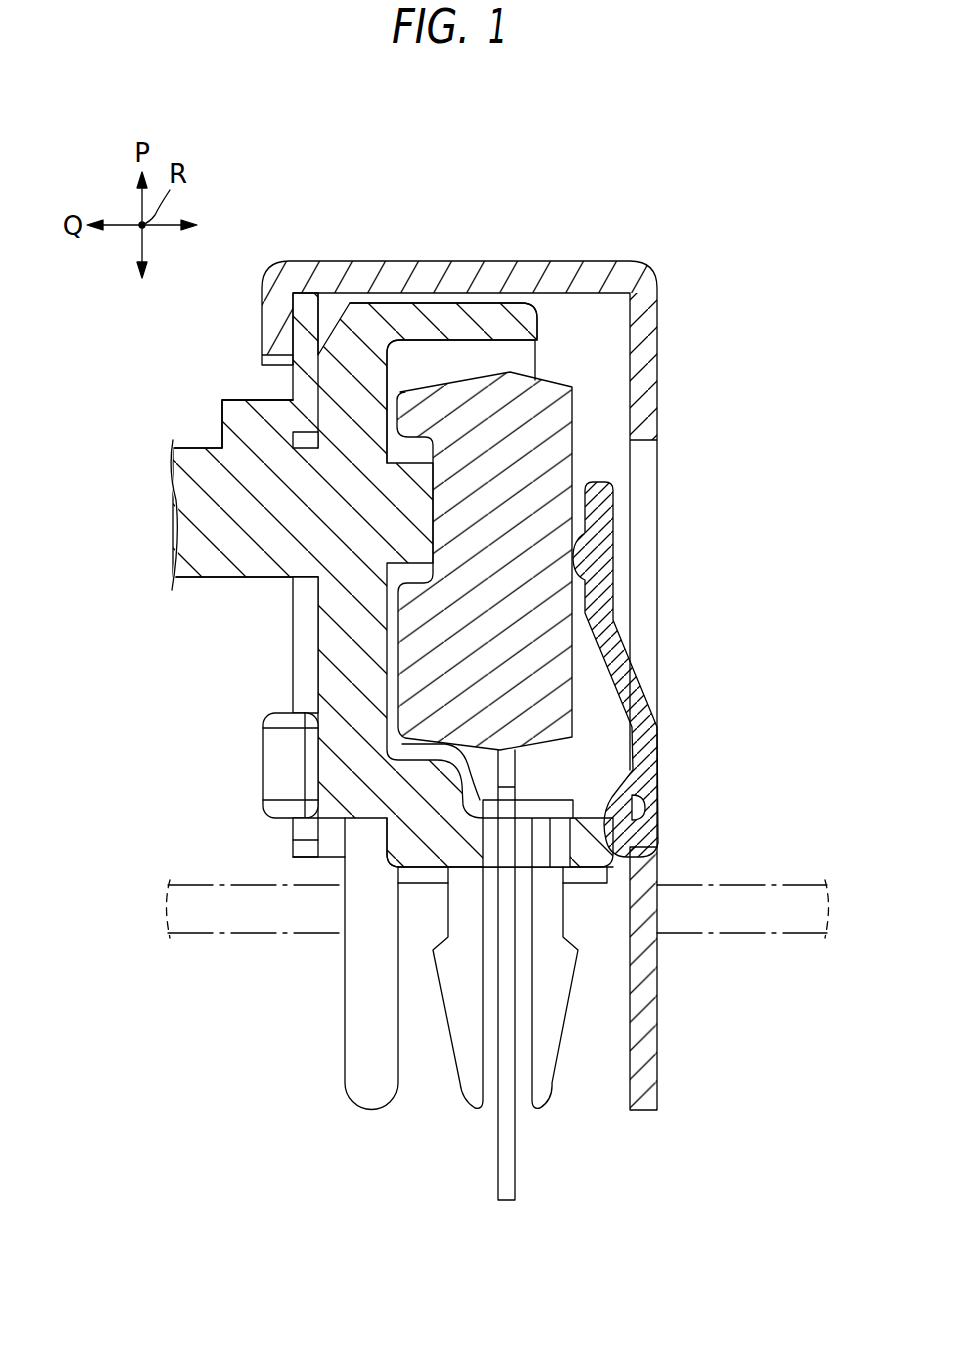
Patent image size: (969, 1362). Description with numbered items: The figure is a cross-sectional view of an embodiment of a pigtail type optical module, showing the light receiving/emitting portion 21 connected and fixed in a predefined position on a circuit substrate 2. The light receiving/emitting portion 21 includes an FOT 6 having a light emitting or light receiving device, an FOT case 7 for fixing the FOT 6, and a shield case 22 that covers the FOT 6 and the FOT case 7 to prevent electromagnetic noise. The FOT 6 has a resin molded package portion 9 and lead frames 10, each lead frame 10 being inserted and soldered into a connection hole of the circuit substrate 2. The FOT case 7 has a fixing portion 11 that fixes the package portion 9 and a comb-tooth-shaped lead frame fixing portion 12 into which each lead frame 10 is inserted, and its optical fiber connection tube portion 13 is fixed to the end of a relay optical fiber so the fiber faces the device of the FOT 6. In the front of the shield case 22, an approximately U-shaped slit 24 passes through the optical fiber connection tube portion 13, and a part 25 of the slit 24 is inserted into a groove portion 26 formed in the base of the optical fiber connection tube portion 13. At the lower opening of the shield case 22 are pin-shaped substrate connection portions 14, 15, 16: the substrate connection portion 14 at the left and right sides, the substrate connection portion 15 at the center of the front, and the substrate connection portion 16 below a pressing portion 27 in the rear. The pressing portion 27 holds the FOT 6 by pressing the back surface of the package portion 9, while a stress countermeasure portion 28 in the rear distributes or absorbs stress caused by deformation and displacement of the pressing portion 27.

The circuit substrate 2 is at (785, 885).
The FOT 6 is at (556, 372).
The FOT case 7 is at (361, 301).
The package portion 9 is at (540, 470).
The lead frame 10 is at (510, 1162).
The fixing portion 11 is at (330, 670).
The lead frame fixing portion 12 is at (447, 860).
The optical fiber connection tube portion 13 is at (218, 563).
The substrate connection portion 14 is at (455, 1087).
The substrate connection portion 15 is at (352, 1047).
The substrate connection portion 16 is at (645, 1043).
The light receiving/emitting portion 21 is at (557, 220).
The shield case 22 is at (658, 350).
The slit 24 is at (303, 625).
The part of slit 25 is at (300, 418).
The groove portion 26 is at (307, 448).
The pressing portion 27 is at (603, 587).
The stress countermeasure portion 28 is at (630, 827).